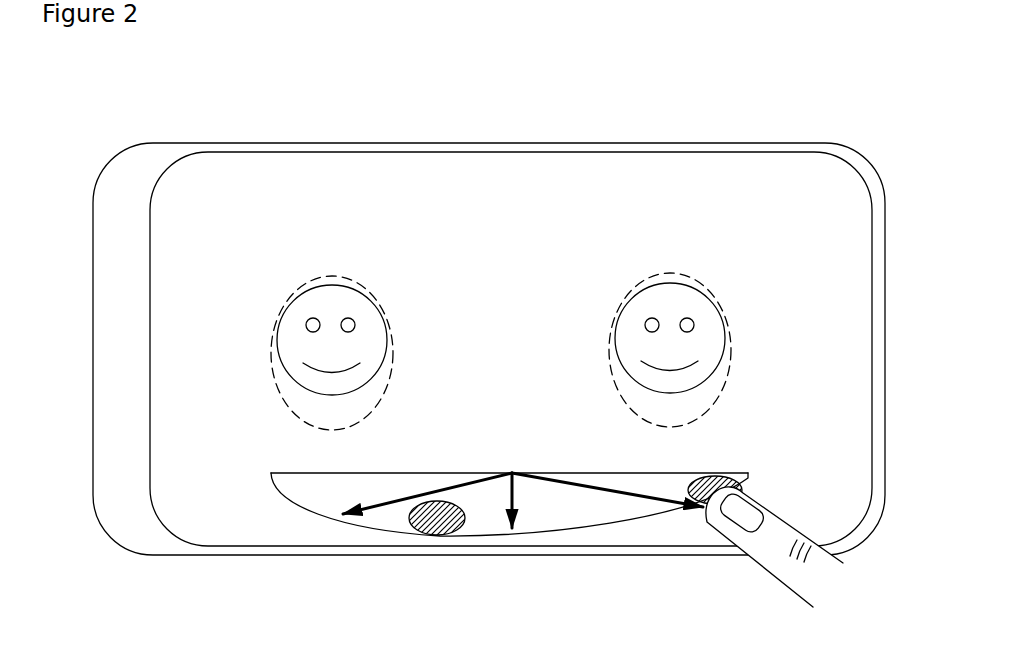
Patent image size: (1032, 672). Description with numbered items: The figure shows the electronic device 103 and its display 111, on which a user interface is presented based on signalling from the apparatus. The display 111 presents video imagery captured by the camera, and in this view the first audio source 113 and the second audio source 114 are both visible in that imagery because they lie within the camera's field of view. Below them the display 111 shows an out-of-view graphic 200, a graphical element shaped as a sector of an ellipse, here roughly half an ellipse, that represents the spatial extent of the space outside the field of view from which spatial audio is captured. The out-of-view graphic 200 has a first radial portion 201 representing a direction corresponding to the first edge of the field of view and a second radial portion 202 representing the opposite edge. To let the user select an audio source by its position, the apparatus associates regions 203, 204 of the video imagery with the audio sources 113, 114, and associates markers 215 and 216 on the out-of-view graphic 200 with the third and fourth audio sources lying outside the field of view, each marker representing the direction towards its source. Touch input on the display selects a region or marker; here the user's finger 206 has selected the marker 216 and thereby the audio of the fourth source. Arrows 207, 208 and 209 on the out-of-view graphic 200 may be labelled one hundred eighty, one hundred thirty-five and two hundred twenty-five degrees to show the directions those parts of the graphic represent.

The electronic device 103 is at (156, 141).
The display 111 is at (253, 171).
The first audio source 113 is at (298, 321).
The second audio source 114 is at (635, 322).
The out-of-view graphic 200 is at (388, 465).
The first radial portion 201 is at (412, 472).
The second radial portion 202 is at (620, 472).
The region 203 is at (327, 278).
The region 204 is at (662, 277).
The finger 206 is at (767, 553).
The arrow 207 is at (514, 476).
The arrow 208 is at (388, 508).
The arrow 209 is at (652, 496).
The marker 215 is at (429, 536).
The marker 216 is at (722, 476).